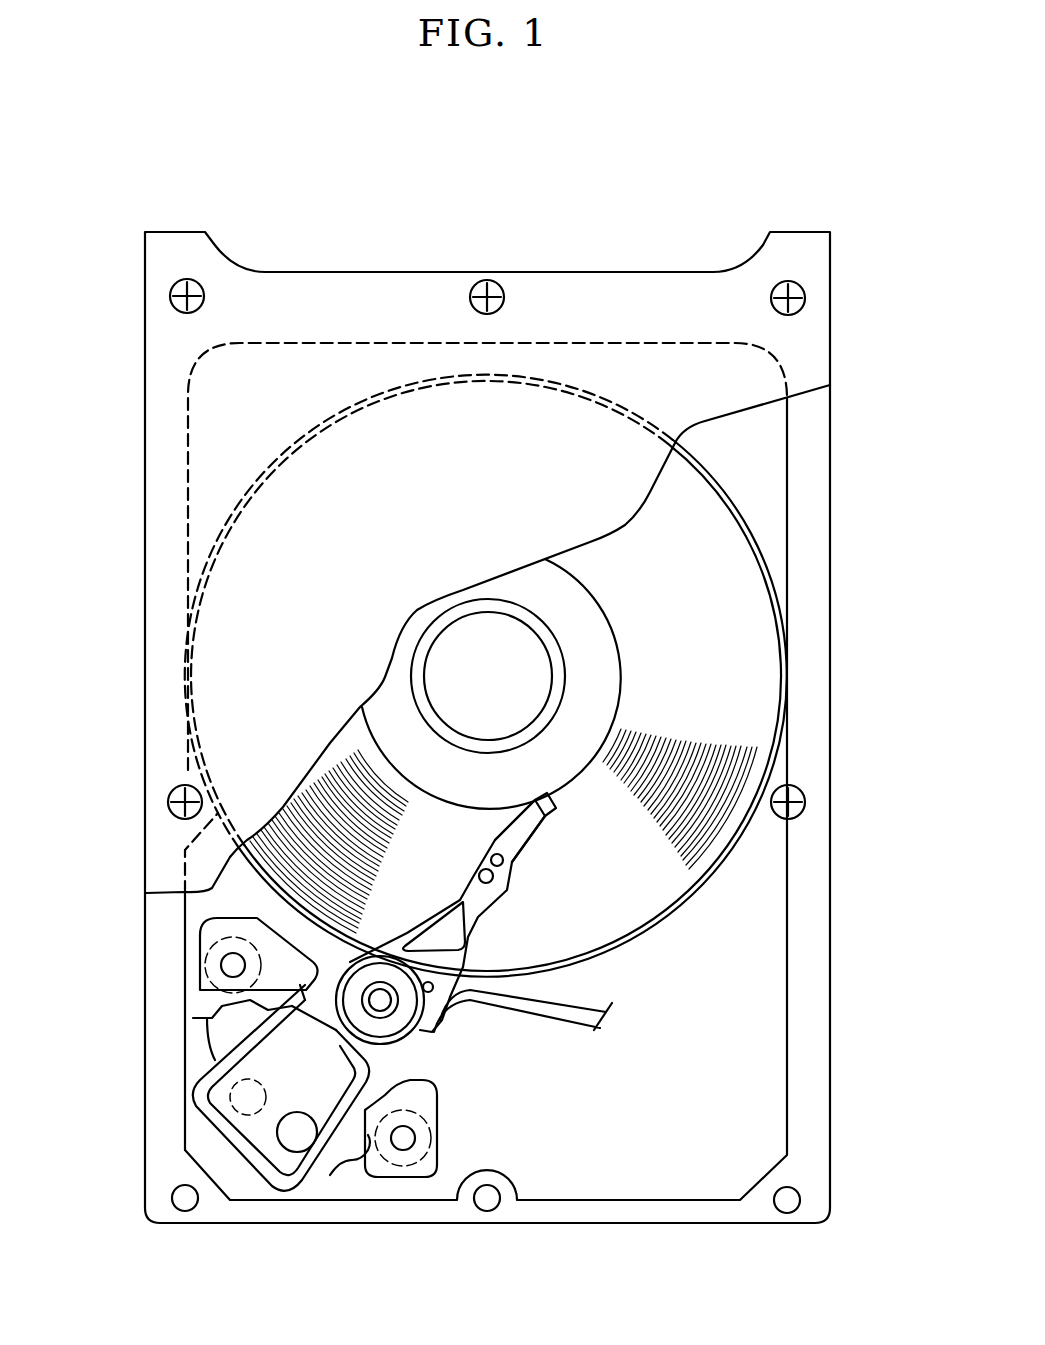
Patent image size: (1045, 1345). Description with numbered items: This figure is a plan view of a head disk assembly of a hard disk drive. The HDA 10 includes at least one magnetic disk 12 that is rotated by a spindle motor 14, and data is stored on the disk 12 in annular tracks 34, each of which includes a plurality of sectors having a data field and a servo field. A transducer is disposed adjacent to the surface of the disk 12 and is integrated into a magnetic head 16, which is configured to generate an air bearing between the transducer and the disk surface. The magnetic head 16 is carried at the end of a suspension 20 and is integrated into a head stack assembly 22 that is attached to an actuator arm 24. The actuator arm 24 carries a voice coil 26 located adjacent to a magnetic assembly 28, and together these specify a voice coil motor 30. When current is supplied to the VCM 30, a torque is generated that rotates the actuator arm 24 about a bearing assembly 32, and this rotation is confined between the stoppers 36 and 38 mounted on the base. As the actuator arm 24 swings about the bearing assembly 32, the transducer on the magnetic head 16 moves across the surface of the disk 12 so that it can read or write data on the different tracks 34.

The head disk assembly 10 is at (625, 192).
The disk 12 is at (740, 612).
The spindle motor 14 is at (463, 650).
The magnetic head 16 is at (555, 805).
The suspension 20 is at (535, 826).
The head stack assembly 22 is at (485, 916).
The actuator arm 24 is at (300, 1013).
The voice coil 26 is at (218, 1083).
The magnetic assembly 28 is at (232, 1030).
The voice coil motor 30 is at (352, 1158).
The bearing assembly 32 is at (393, 1006).
The annular tracks 34 is at (343, 795).
The stopper 36 is at (437, 1140).
The stopper 38 is at (202, 953).